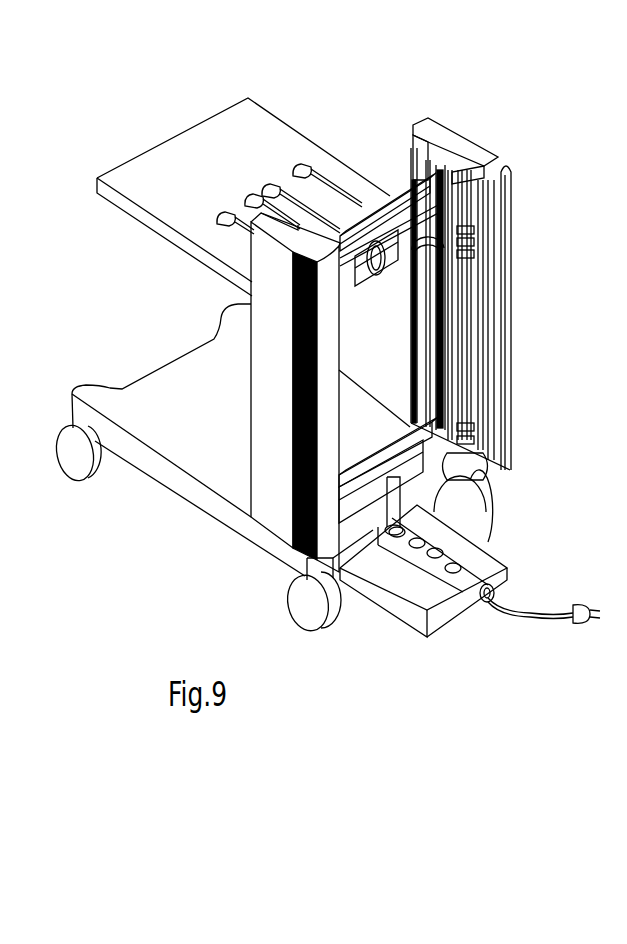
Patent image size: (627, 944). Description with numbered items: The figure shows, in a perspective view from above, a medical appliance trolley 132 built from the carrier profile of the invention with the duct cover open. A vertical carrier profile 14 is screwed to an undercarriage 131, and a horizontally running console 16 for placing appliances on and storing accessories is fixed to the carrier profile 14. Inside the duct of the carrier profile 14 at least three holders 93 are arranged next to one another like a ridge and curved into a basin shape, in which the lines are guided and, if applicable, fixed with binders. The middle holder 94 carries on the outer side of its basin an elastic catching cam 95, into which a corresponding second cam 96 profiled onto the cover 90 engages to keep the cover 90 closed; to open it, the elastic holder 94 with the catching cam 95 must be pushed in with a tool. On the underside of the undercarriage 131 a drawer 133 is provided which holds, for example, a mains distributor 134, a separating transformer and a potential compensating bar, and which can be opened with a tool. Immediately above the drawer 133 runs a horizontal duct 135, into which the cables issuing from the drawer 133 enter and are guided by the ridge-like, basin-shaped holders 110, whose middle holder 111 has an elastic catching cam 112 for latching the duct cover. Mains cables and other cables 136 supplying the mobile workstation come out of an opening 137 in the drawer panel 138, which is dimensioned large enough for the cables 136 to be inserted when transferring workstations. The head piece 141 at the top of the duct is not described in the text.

The console 16 is at (222, 140).
The carrier profile 14 is at (258, 385).
The undercarriage 131 is at (202, 465).
The column head 141 is at (463, 160).
The cover 90 is at (503, 183).
The second cam 96 is at (517, 170).
The middle holder 111 is at (392, 217).
The elastic catching cam 112 is at (385, 215).
The holders 110 is at (367, 240).
The appliance trolley 132 is at (396, 100).
The holders 93 is at (474, 230).
The middle holder 94 is at (474, 243).
The elastic catching cam 95 is at (465, 347).
The horizontal duct 135 is at (350, 533).
The mains distributor 134 is at (480, 543).
The drawer 133 is at (497, 560).
The drawer panel 138 is at (448, 617).
The opening 137 is at (486, 602).
The cables 136 is at (580, 625).